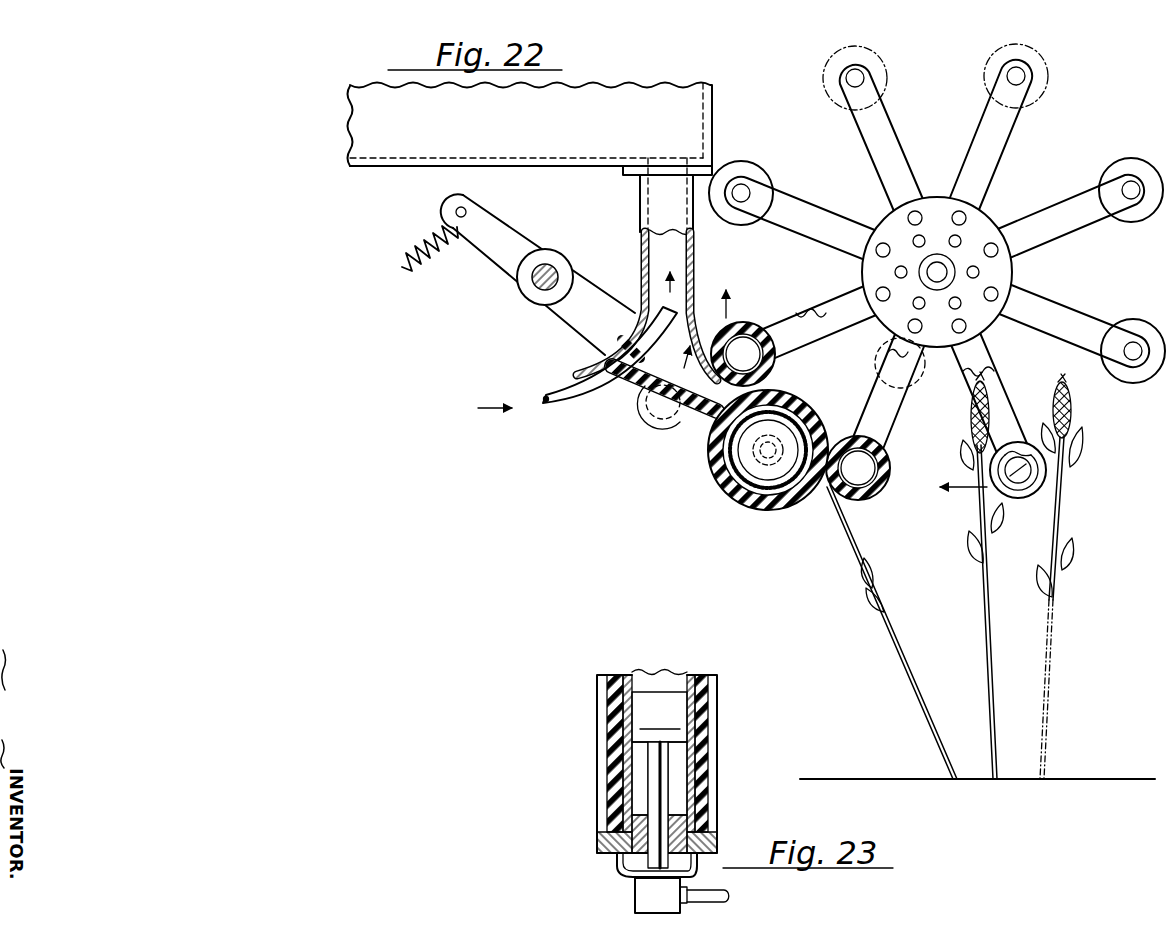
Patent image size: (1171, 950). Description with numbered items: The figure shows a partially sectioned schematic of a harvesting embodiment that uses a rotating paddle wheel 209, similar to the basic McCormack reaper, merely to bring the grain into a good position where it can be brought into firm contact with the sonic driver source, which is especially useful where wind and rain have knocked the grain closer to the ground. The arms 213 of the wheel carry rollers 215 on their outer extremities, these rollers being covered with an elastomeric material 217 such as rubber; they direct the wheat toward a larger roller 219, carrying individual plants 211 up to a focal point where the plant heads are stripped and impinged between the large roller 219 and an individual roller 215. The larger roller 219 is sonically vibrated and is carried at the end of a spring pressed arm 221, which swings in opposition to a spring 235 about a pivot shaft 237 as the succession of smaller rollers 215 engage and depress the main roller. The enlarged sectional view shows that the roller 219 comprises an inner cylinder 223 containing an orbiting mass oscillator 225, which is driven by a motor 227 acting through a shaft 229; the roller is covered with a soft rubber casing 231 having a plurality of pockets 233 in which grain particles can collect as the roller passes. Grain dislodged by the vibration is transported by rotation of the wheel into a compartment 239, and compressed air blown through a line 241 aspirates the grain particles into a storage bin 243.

In FIG. 22, the paddle wheel 209 is at (940, 261).
In FIG. 22, the individual plants 211 is at (870, 565).
In FIG. 22, the arms 213 is at (893, 133).
In FIG. 22, the rollers 215 is at (875, 58).
In FIG. 22, the elastomeric material 217 is at (752, 322).
In FIG. 22, the larger roller 219 is at (800, 512).
In FIG. 23, the larger roller 219 is at (645, 769).
In FIG. 22, the spring pressed arm 221 is at (487, 253).
In FIG. 23, the inner cylinder 223 is at (637, 676).
In FIG. 23, the orbiting mass oscillator 225 is at (672, 703).
In FIG. 23, the motor 227 is at (633, 889).
In FIG. 23, the shaft 229 is at (650, 775).
In FIG. 23, the soft rubber casing 231 is at (713, 753).
In FIG. 23, the pockets 233 is at (600, 731).
In FIG. 22, the spring 235 is at (420, 235).
In FIG. 22, the pivot shaft 237 is at (548, 263).
In FIG. 22, the compartment 239 is at (680, 300).
In FIG. 22, the line 241 is at (555, 408).
In FIG. 22, the storage bin 243 is at (360, 109).